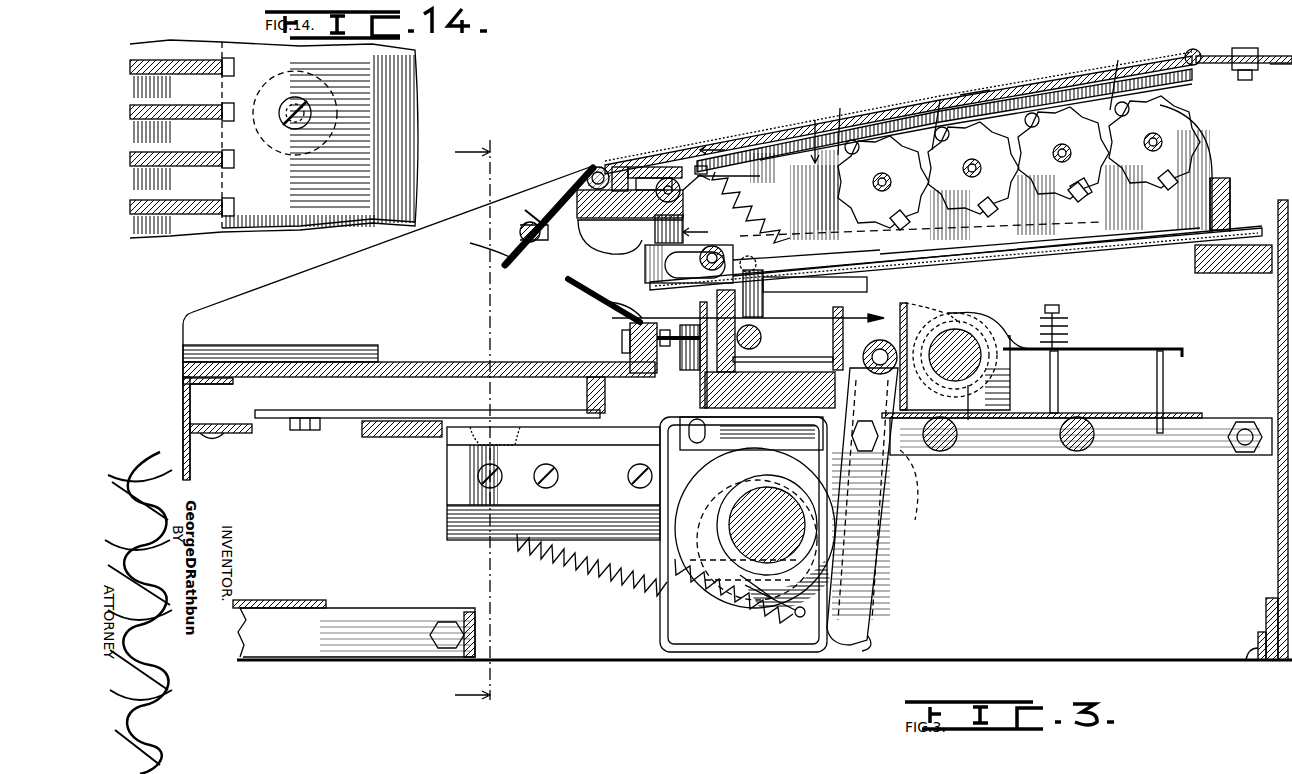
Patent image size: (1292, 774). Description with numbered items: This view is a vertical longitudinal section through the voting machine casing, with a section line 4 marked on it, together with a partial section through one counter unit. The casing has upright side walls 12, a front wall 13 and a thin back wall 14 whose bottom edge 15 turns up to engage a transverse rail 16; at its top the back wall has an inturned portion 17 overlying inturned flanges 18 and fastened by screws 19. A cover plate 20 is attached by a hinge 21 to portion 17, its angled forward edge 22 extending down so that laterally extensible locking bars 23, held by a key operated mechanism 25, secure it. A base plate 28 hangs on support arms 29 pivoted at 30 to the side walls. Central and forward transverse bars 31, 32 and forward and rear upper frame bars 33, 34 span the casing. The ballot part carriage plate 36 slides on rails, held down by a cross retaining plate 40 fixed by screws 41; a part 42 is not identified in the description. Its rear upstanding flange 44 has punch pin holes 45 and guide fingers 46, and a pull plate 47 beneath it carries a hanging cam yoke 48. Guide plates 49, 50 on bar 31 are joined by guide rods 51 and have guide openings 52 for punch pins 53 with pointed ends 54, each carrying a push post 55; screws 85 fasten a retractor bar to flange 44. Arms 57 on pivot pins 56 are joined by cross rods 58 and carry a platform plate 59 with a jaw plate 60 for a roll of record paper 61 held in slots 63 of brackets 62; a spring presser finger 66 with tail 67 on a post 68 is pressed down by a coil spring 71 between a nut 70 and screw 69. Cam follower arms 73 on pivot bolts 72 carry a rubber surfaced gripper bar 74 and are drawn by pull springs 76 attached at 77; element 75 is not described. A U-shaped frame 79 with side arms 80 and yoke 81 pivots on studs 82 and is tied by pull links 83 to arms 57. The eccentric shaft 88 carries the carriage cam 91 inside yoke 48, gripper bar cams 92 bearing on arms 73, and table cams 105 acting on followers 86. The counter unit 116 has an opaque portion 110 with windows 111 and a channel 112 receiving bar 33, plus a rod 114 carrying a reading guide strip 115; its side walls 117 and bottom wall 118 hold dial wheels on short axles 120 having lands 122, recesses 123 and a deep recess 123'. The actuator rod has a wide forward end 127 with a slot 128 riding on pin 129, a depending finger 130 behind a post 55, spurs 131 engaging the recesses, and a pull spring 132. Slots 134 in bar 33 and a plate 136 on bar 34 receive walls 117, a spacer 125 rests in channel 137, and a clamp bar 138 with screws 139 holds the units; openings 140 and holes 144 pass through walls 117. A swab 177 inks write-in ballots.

In FIG. 3, the section line 4- 4 is at (465, 422).
In FIG. 3, the side walls 12 is at (280, 292).
In FIG. 3, the front wall 13 is at (175, 462).
In FIG. 3, the back wall 14 is at (1278, 515).
In FIG. 3, the inturned bottom edge 15 is at (1256, 662).
In FIG. 3, the transverse rail 16 is at (1264, 605).
In FIG. 3, the inwardly and forwardly directed portion 17 is at (1205, 56).
In FIG. 3, the inturned flanges 18 is at (1270, 60).
In FIG. 3, the screws or bolts 19 is at (1246, 48).
In FIG. 3, the cover plate 20 is at (916, 100).
In FIG. 3, the hinge 21 is at (1186, 54).
In FIG. 3, the angled forward edge 22 is at (475, 244).
In FIG. 3, the locking bars 23 is at (528, 222).
In FIG. 3, the key operated mechanism 25 is at (533, 212).
In FIG. 3, the base plate 28 is at (282, 600).
In FIG. 3, the support arms 29 is at (368, 618).
In FIG. 3, the pivot 30 is at (432, 640).
In FIG. 3, the central transverse bar 31 is at (712, 425).
In FIG. 3, the forward transverse bar 32 is at (410, 438).
In FIG. 3, the forward upper transverse frame bar 33 is at (590, 235).
In FIG. 14, the rear upper transverse frame bar 34 is at (403, 125).
In FIG. 3, the rear upper transverse frame bar 34 is at (1240, 274).
In FIG. 3, the ballot part carriage plate 36 is at (440, 360).
In FIG. 3, the cross retaining plate 40 is at (250, 434).
In FIG. 3, the screws 41 is at (214, 440).
In FIG. 3, the plate 42 is at (328, 344).
In FIG. 3, the rear upstanding flange 44 is at (630, 352).
In FIG. 3, the punch pin holes 45 is at (616, 304).
In FIG. 3, the guide finger 46 is at (580, 278).
In FIG. 3, the pull plate 47 is at (543, 408).
In FIG. 3, the cam yoke 48 is at (660, 610).
In FIG. 3, the forward guide plate 49 is at (690, 345).
In FIG. 3, the rear guide plate 50 is at (828, 355).
In FIG. 3, the guide rods 51 is at (808, 358).
In FIG. 3, the punch pin guide openings 52 is at (815, 287).
In FIG. 3, the punch pins 53 is at (612, 318).
In FIG. 3, the pointed rear end 54 is at (884, 316).
In FIG. 3, the push post 55 is at (804, 265).
In FIG. 3, the fixed pivot pin 56 is at (1245, 452).
In FIG. 3, the arm 57 is at (1145, 450).
In FIG. 3, the cross rods 58 is at (940, 452).
In FIG. 3, the platform plate 59 is at (1168, 414).
In FIG. 3, the paper guide and jaw plate 60 is at (906, 414).
In FIG. 3, the roll of record paper 61 is at (967, 408).
In FIG. 3, the brackets 62 is at (1008, 330).
In FIG. 3, the upwardly opening slots 63 is at (975, 318).
In FIG. 3, the spring presser finger 66 is at (1033, 318).
In FIG. 3, the tail portion 67 is at (1145, 347).
In FIG. 3, the supporting post 68 is at (1157, 378).
In FIG. 3, the vertical screw 69 is at (1060, 390).
In FIG. 3, the nut 70 is at (1060, 315).
In FIG. 3, the coil spring 71 is at (1066, 336).
In FIG. 3, the pivot bolt 72 is at (866, 421).
In FIG. 3, the cam follower arm 73 is at (885, 553).
In FIG. 3, the gripper bar 74 is at (878, 348).
In FIG. 3, the plate 75 is at (905, 303).
In FIG. 3, the pull spring 76 is at (596, 565).
In FIG. 3, the spring attachment point 77 is at (797, 620).
In FIG. 3, the U-shaped frame 79 is at (1232, 178).
In FIG. 3, the side arms 80 is at (1216, 178).
In FIG. 3, the cross connecting yoke 81 is at (1232, 198).
In FIG. 3, the supporting studs 82 is at (751, 207).
In FIG. 3, the pull link 83 is at (700, 375).
In FIG. 3, the screws 85 is at (622, 338).
In FIG. 3, the eccentric follower 86 is at (867, 643).
In FIG. 3, the eccentric shaft 88 is at (745, 500).
In FIG. 3, the carriage plate advancing and retracting cam 91 is at (750, 612).
In FIG. 3, the gripper bar actuating cam 92 is at (734, 597).
In FIG. 3, the paper table lowering and raising cam 105 is at (806, 470).
In FIG. 3, the opaque lower portion 110 is at (712, 150).
In FIG. 3, the windows 111 is at (1028, 98).
In FIG. 3, the transverse channel 112 is at (800, 135).
In FIG. 3, the rod 114 is at (596, 166).
In FIG. 3, the reading guide strip 115 is at (972, 100).
In FIG. 3, the counter units 116 is at (815, 120).
In FIG. 14, the side walls 117 is at (135, 165).
In FIG. 3, the side walls 117 is at (745, 145).
In FIG. 14, the bottom wall 118 is at (140, 98).
In FIG. 3, the short axles 120 is at (958, 168).
In FIG. 3, the lands 122 is at (872, 136).
In FIG. 3, the recesses 123 is at (1003, 119).
In FIG. 3, the deep recess 123' is at (1016, 189).
In FIG. 3, the spacer 125 is at (672, 166).
In FIG. 3, the wide forward end 127 is at (645, 262).
In FIG. 3, the longitudinal slot 128 is at (680, 230).
In FIG. 3, the transverse pin 129 is at (727, 254).
In FIG. 3, the depending finger 130 is at (769, 293).
In FIG. 3, the spurs 131 is at (815, 238).
In FIG. 3, the pull spring 132 is at (800, 215).
In FIG. 3, the slots 134 is at (700, 186).
In FIG. 14, the plate 136 is at (308, 208).
In FIG. 3, the plate 136 is at (1245, 230).
In FIG. 3, the groove or channel 137 is at (640, 222).
In FIG. 3, the clamp bar 138 is at (660, 178).
In FIG. 3, the clamping bar screws 139 is at (622, 166).
In FIG. 3, the openings 140 is at (1080, 200).
In FIG. 3, the holes 144 is at (980, 101).
In FIG. 3, the swab 177 is at (465, 440).